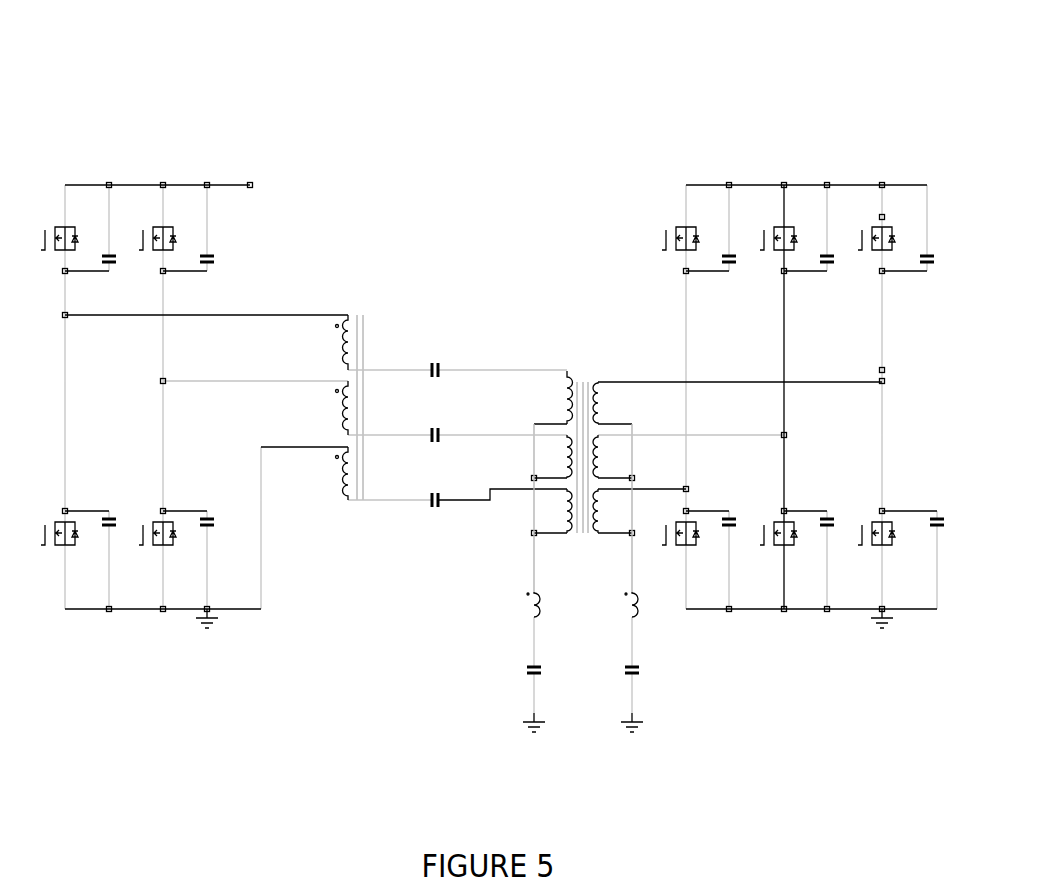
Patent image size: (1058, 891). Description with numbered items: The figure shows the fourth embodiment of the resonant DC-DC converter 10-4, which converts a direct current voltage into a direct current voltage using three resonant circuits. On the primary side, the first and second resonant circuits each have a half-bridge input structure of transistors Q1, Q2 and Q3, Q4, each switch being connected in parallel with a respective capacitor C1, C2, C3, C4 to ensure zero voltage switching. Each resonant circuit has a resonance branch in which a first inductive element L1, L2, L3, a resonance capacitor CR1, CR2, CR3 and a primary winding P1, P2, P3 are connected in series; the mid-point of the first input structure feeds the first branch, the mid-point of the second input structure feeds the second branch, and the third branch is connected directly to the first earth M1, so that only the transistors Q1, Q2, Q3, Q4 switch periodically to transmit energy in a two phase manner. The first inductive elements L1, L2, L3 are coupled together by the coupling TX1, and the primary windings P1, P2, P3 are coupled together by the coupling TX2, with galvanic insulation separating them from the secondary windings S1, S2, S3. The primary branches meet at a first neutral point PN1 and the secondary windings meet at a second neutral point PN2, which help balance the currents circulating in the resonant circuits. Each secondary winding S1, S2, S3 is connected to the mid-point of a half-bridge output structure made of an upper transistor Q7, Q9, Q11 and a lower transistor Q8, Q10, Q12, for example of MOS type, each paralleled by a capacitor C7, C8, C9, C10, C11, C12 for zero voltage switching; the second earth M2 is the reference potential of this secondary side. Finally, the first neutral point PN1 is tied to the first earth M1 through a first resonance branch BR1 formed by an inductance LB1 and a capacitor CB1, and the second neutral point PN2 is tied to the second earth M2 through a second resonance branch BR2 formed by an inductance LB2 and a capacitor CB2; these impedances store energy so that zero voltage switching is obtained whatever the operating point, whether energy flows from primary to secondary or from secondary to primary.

The converter 10-4 is at (608, 112).
The transistor Q1 is at (68, 236).
The transistor Q2 is at (67, 540).
The transistor Q3 is at (166, 236).
The transistor Q4 is at (165, 540).
The upper transistor Q7 is at (885, 236).
The lower transistor Q8 is at (884, 540).
The upper transistor Q9 is at (787, 236).
The lower transistor Q10 is at (790, 540).
The upper transistor Q11 is at (693, 236).
The lower transistor Q12 is at (692, 540).
The capacitor C1 is at (117, 263).
The capacitor C2 is at (117, 522).
The capacitor C3 is at (215, 263).
The capacitor C4 is at (215, 522).
The capacitor C7 is at (935, 263).
The capacitor C8 is at (945, 522).
The capacitor C9 is at (835, 263).
The capacitor C10 is at (839, 522).
The capacitor C11 is at (741, 263).
The capacitor C12 is at (741, 522).
The coupling TX1 is at (348, 400).
The first inductive element L1 is at (335, 342).
The first inductive element L2 is at (335, 408).
The first inductive element L3 is at (335, 473).
The resonance capacitor CR1 is at (437, 363).
The resonance capacitor CR2 is at (437, 428).
The resonance capacitor CR3 is at (437, 493).
The coupling TX2 is at (585, 450).
The primary winding P1 is at (558, 397).
The primary winding P2 is at (558, 456).
The primary winding P3 is at (558, 511).
The secondary winding S1 is at (609, 403).
The secondary winding S2 is at (609, 456).
The secondary winding S3 is at (609, 511).
The first neutral point PN1 is at (518, 508).
The second neutral point PN2 is at (647, 508).
The inductance LB1 is at (546, 604).
The inductance LB2 is at (644, 604).
The capacitor CB1 is at (547, 671).
The capacitor CB2 is at (645, 671).
The first resonance branch BR1 is at (510, 617).
The second resonance branch BR2 is at (642, 638).
The first earth M1 is at (370, 679).
The second earth M2 is at (757, 679).